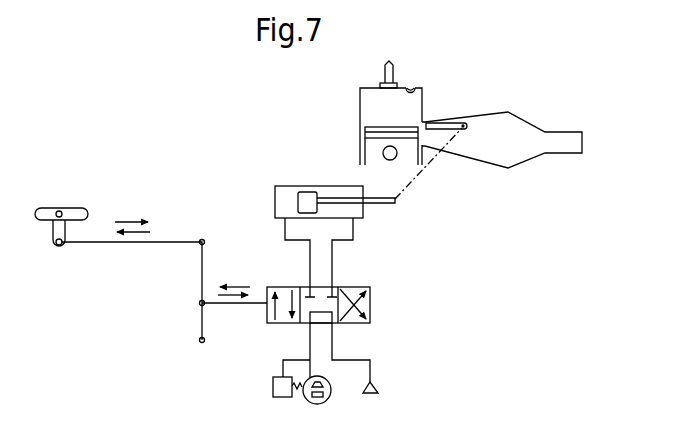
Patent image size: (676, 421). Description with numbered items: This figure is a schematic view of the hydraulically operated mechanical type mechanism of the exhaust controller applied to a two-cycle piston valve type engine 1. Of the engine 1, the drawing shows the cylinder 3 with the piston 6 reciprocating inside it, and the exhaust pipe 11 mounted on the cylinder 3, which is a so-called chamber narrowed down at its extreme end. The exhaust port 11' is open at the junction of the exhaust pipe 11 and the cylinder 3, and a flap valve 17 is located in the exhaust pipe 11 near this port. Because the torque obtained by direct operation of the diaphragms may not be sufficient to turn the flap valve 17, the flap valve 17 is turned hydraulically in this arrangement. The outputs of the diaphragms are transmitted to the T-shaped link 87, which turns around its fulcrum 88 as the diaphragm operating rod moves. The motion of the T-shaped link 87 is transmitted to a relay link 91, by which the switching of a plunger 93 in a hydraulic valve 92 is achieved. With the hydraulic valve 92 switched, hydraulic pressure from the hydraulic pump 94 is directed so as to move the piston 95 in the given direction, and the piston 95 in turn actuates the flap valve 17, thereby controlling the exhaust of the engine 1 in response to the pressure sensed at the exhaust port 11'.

The engine 1 is at (354, 112).
The cylinder 3 is at (412, 92).
The piston 6 is at (392, 127).
The exhaust pipe 11 is at (502, 120).
The exhaust port 11' is at (443, 124).
The flap valve 17 is at (438, 123).
The T-shaped link 87 is at (80, 210).
The fulcrum 88 is at (59, 211).
The relay link 91 is at (202, 281).
The hydraulic valve 92 is at (286, 276).
The plunger 93 is at (372, 305).
The hydraulic pump 94 is at (273, 390).
The piston 95 is at (338, 200).